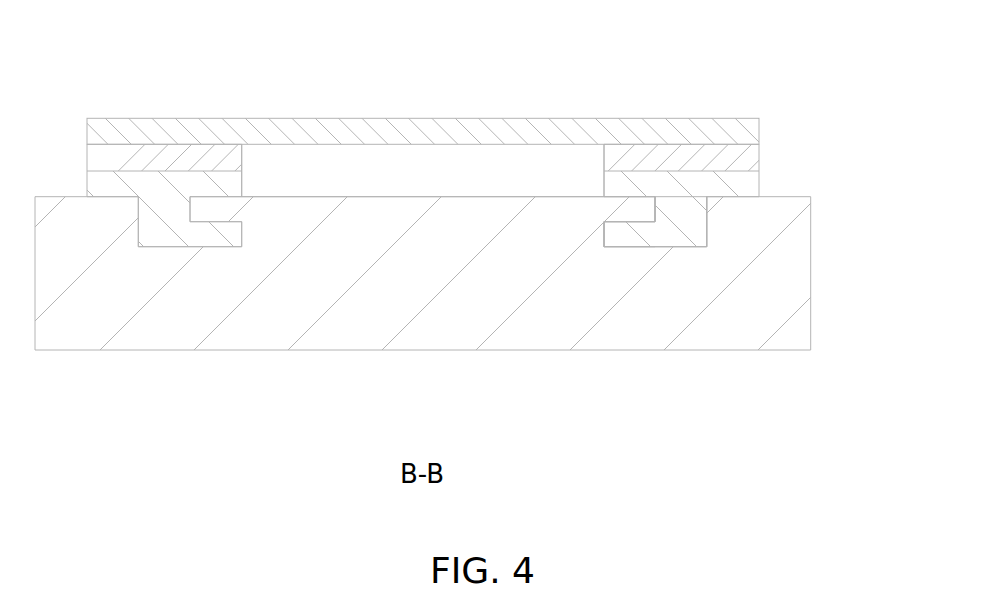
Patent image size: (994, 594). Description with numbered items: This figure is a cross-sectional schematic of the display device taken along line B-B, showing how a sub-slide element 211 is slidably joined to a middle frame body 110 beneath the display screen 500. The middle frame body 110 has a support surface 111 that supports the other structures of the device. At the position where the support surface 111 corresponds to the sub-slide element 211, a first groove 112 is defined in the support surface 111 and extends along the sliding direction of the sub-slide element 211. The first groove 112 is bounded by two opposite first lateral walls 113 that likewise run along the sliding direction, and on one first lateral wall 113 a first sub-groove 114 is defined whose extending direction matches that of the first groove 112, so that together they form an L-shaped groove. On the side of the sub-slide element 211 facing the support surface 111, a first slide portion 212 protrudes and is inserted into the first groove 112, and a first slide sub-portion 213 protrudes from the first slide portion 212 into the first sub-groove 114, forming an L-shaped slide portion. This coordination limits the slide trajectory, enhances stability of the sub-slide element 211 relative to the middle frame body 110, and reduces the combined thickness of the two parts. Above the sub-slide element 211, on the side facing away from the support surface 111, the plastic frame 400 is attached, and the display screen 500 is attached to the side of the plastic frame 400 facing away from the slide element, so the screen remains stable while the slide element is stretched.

The middle frame body 110 is at (780, 332).
The support surface 111 is at (420, 197).
The first groove 112 is at (697, 210).
The first lateral wall 113 is at (707, 232).
The first sub-groove 114 is at (608, 245).
The sub-slide element 211 is at (683, 417).
The first slide portion 212 is at (673, 226).
The first slide sub-portion 213 is at (630, 237).
The plastic frame 400 is at (738, 163).
The display screen 500 is at (733, 135).